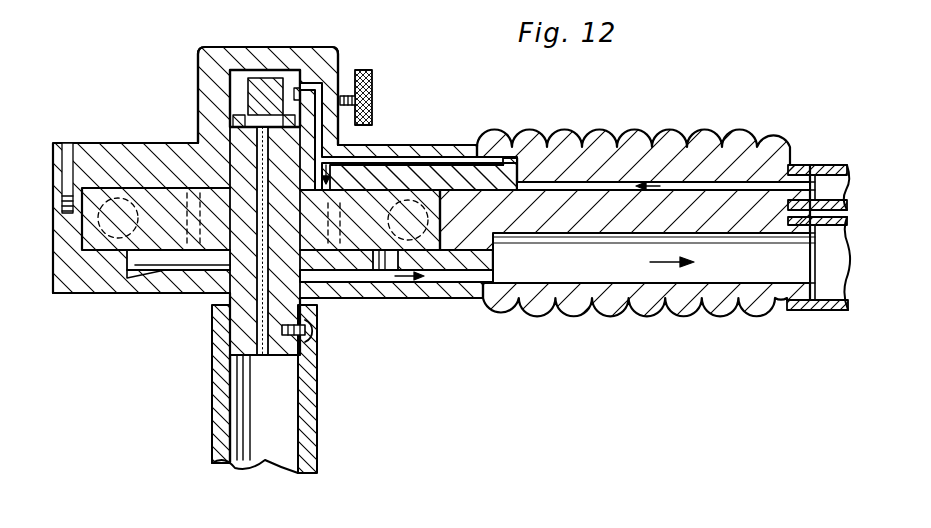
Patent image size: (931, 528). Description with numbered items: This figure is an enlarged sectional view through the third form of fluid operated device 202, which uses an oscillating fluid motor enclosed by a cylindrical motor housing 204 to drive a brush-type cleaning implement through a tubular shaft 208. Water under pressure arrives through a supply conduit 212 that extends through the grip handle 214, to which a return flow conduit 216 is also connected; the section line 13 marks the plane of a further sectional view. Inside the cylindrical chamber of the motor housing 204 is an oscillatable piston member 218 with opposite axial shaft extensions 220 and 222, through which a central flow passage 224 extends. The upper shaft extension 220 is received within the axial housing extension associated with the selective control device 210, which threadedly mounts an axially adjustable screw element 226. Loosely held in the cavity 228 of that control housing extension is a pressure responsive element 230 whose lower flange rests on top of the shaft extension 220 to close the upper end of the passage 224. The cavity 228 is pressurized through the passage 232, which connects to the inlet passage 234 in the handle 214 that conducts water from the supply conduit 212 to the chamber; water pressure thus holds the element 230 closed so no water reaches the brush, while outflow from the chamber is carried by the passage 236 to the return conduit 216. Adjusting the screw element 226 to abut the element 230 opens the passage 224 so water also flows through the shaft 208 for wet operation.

The section line 13- 13 is at (38, 155).
The fluid operated device 202 is at (92, 136).
The motor housing 204 is at (90, 293).
The tubular shaft 208 is at (307, 400).
The control device 210 is at (300, 58).
The supply conduit 212 is at (827, 165).
The grip handle 214 is at (560, 140).
The return flow conduit 216 is at (820, 310).
The oscillatable piston member 218 is at (134, 184).
The shaft extension 220 is at (230, 137).
The shaft extension 222 is at (237, 327).
The central flow passage 224 is at (268, 307).
The screw element 226 is at (347, 94).
The cavity 228 is at (242, 82).
The pressure responsive element 230 is at (268, 86).
The passage 232 is at (317, 125).
The inlet passage 234 is at (450, 172).
The passage 236 is at (437, 277).